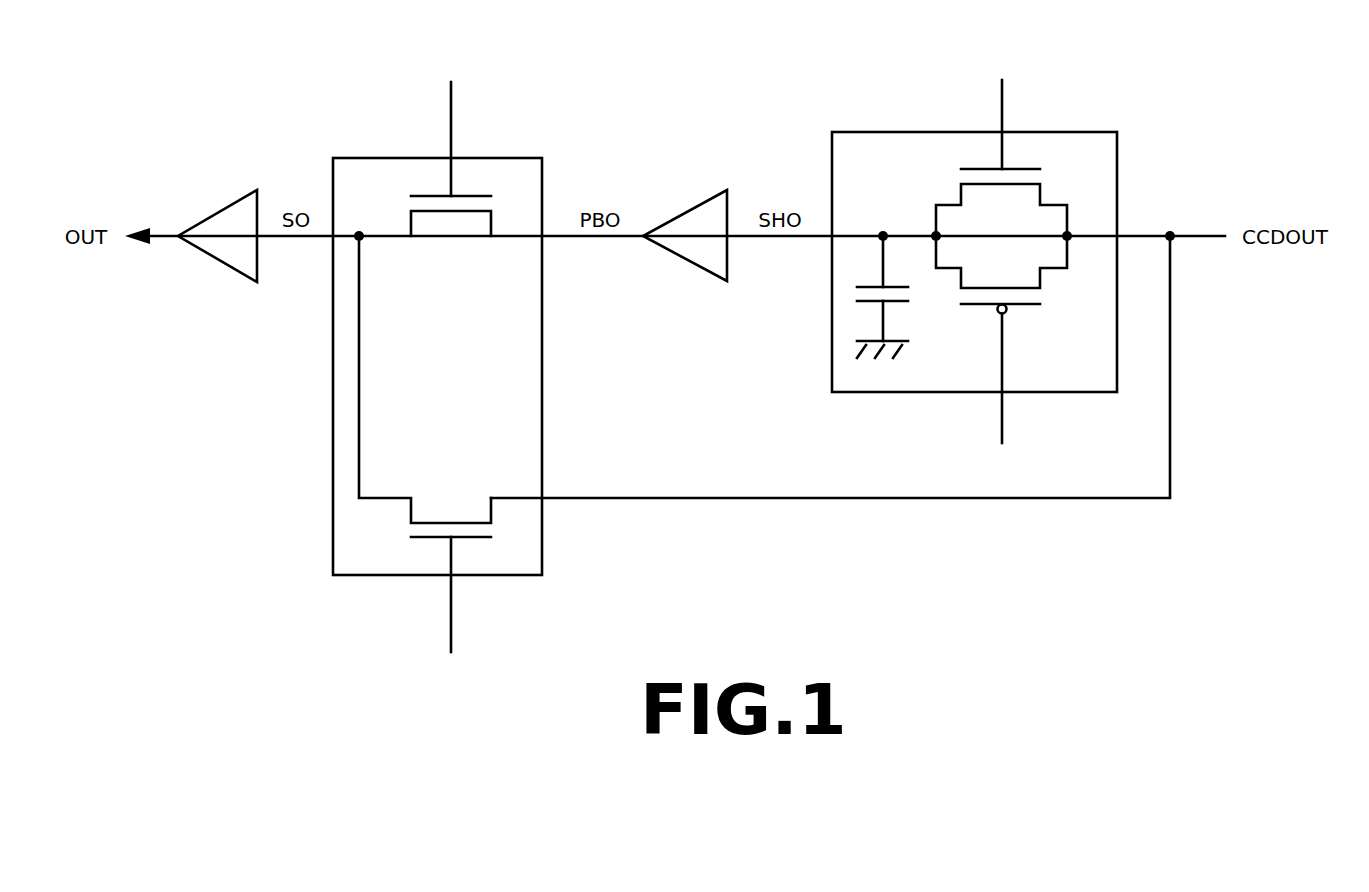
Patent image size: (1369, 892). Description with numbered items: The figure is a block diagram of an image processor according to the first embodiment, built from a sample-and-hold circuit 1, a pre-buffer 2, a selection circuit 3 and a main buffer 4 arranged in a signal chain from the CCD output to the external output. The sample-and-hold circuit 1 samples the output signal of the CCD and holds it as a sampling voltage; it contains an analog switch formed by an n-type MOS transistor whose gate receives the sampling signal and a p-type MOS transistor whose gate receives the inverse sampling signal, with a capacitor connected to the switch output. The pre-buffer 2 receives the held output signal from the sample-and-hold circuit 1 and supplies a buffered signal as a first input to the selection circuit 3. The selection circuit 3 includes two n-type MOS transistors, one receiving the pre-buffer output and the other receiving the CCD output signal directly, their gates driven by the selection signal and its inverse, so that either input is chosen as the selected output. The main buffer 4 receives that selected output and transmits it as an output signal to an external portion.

The sample-and-hold circuit 1 is at (1042, 132).
The pre-buffer 2 is at (696, 207).
The selection circuit 3 is at (510, 158).
The main buffer 4 is at (230, 200).